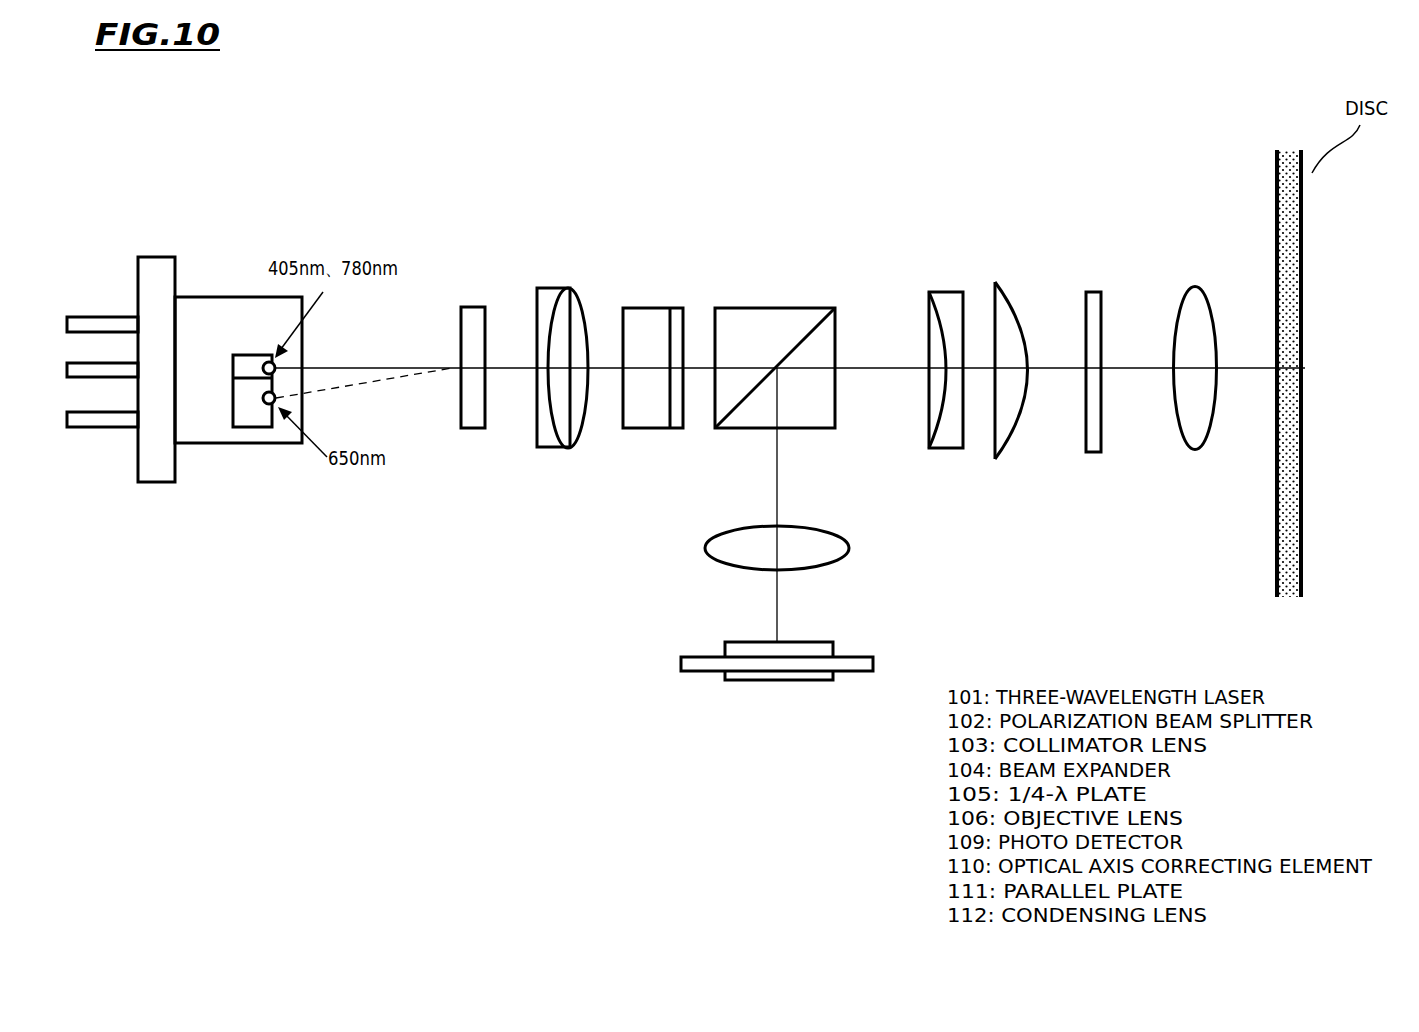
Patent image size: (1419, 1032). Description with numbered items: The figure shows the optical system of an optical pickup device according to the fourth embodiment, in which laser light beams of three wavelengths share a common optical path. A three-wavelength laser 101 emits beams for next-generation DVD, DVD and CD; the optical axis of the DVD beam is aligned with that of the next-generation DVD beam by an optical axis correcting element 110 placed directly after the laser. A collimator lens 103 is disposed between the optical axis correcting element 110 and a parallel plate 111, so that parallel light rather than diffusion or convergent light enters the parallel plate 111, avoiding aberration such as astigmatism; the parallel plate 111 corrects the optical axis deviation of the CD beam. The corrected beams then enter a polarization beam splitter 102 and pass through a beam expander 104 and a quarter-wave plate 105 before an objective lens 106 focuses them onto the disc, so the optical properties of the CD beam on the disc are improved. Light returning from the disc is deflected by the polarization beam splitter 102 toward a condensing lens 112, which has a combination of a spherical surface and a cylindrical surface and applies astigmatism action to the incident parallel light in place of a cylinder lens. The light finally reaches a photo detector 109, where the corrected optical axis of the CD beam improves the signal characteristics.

The three-wavelength laser 101 is at (170, 245).
The polarization beam splitter 102 is at (787, 293).
The collimator lens 103 is at (563, 280).
The beam expander 104 is at (1012, 264).
The λ/4 plate 105 is at (1093, 272).
The objective lens 106 is at (1195, 272).
The photo detector 109 is at (886, 649).
The optical axis correcting element 110 is at (470, 305).
The parallel plate 111 is at (673, 300).
The condensing lens 112 is at (833, 547).